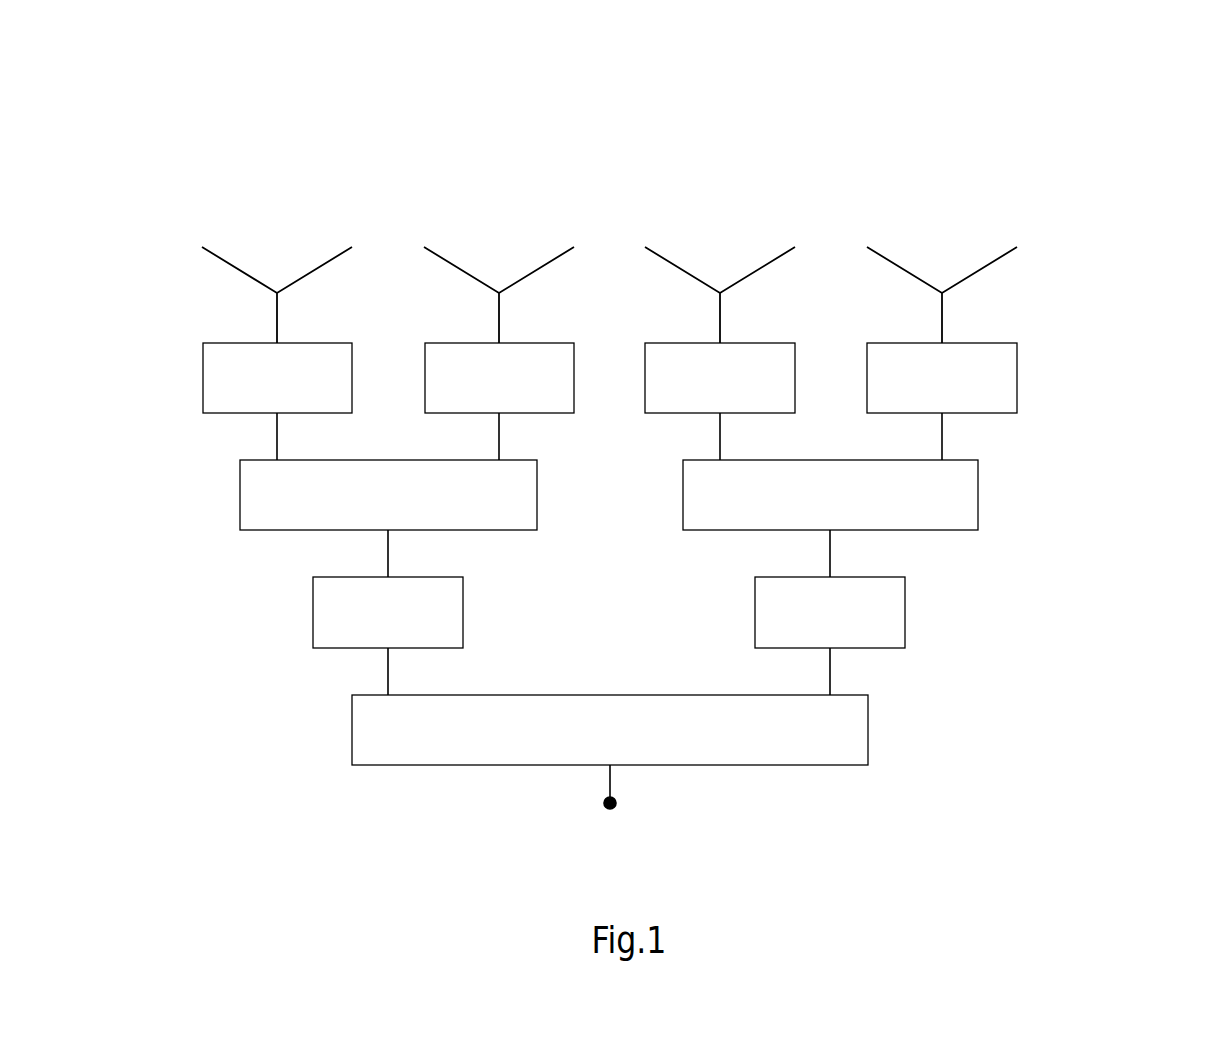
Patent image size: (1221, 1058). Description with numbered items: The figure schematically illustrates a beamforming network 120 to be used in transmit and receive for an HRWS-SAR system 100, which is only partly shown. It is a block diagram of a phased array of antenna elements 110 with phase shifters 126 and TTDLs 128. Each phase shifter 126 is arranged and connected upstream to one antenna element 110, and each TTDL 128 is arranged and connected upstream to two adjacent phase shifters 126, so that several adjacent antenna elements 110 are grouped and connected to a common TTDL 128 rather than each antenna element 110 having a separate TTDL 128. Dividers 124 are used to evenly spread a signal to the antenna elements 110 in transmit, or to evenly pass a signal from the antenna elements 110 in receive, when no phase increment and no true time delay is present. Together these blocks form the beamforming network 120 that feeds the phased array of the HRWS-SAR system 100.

The HRWS-SAR system 100 is at (290, 195).
The antenna elements 110 is at (151, 289).
The beamforming network 120 is at (151, 543).
The dividers 124 is at (1067, 502).
The phase shifters 126 is at (1067, 382).
The TTDLs 128 is at (1067, 618).